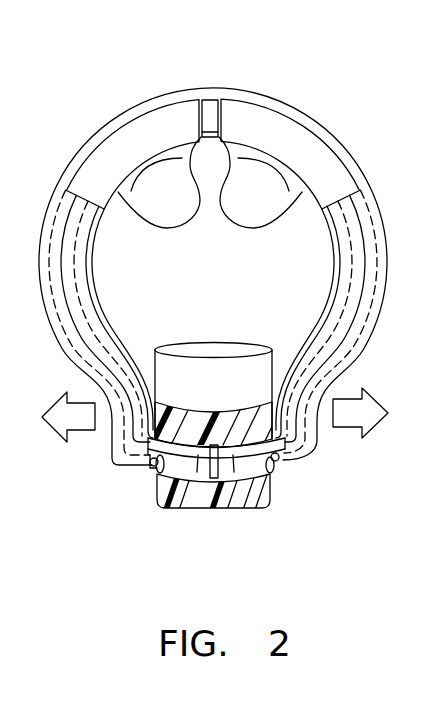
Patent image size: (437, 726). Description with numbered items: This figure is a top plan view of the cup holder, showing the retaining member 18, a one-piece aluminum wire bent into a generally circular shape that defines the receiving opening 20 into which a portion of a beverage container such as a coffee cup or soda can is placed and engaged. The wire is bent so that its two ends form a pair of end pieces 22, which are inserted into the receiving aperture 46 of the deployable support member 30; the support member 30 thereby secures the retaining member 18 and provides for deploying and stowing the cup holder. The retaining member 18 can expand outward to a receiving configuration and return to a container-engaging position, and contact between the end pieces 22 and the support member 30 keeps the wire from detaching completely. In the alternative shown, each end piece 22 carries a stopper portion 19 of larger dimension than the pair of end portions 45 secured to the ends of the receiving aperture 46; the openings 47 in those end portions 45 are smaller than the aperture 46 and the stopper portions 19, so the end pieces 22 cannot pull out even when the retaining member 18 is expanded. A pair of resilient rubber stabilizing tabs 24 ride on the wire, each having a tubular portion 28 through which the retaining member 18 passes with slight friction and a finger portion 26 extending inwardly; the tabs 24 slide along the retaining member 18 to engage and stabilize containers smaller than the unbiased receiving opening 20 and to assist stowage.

The retaining member 18 is at (363, 218).
The stopper portion 19 is at (177, 494).
The receiving opening 20 is at (318, 282).
The end pieces 22 is at (205, 490).
The stabilizing tabs 24 is at (102, 130).
The finger portion 26 is at (233, 208).
The tubular portion 28 is at (314, 130).
The deployable support member 30 is at (262, 512).
The end portions 45 is at (153, 472).
The receiving aperture 46 is at (157, 480).
The openings 47 is at (151, 466).